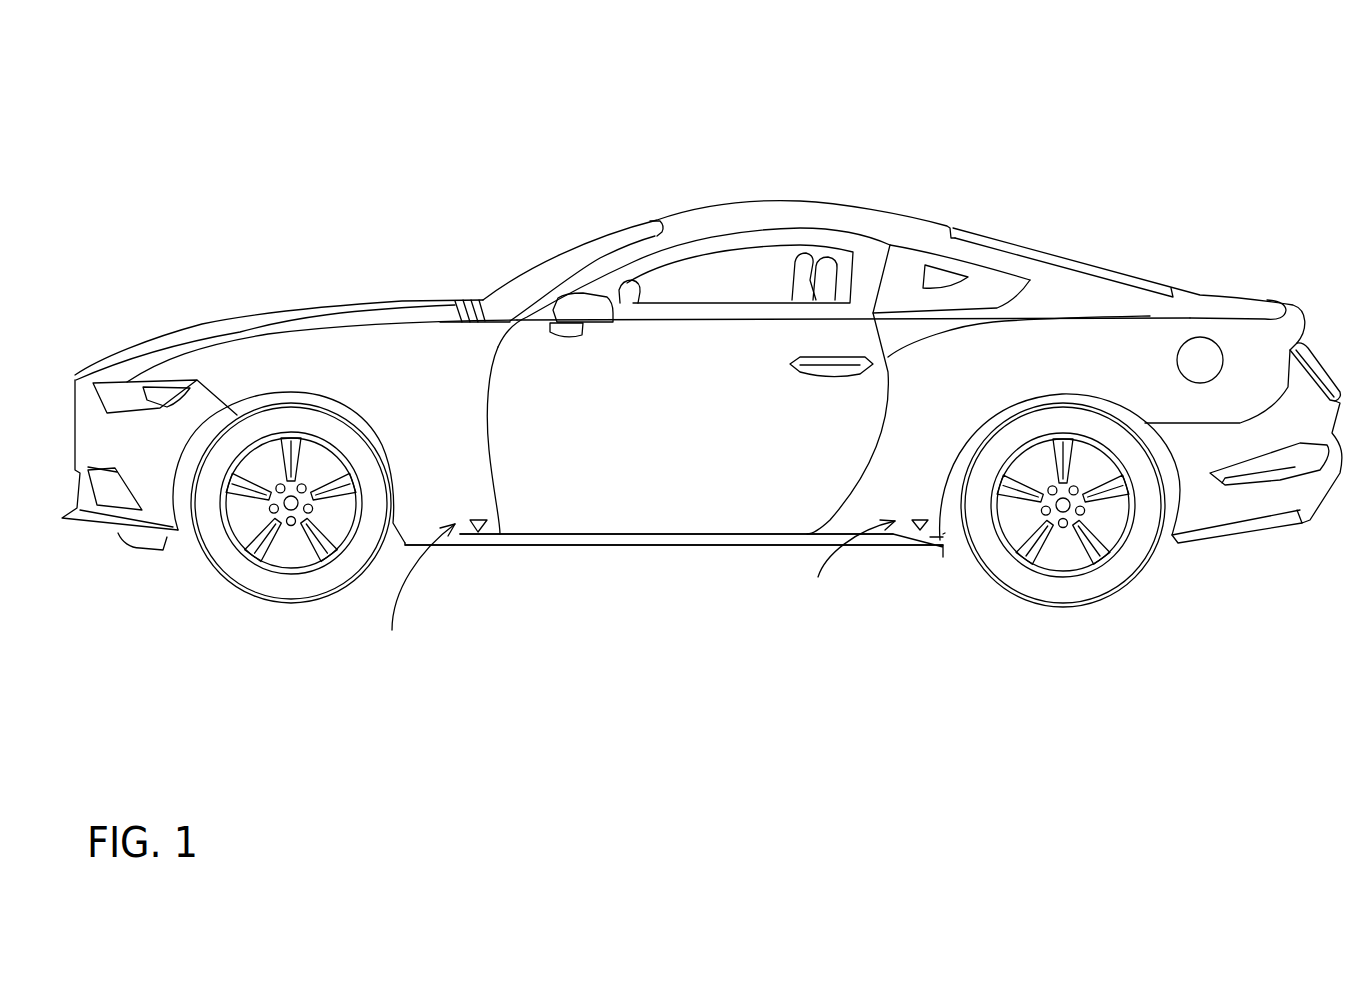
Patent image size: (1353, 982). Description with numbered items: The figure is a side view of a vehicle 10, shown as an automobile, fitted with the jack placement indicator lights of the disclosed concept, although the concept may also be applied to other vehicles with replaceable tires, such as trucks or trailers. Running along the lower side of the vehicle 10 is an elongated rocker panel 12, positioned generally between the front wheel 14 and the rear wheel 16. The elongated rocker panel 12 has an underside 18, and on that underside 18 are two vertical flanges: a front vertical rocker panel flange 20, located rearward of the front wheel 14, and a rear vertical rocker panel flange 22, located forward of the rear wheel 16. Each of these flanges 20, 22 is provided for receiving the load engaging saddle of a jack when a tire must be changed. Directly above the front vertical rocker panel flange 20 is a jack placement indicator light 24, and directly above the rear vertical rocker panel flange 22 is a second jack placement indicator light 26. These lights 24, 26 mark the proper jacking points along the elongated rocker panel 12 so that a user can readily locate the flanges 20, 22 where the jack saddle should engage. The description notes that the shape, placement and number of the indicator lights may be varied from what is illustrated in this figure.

The vehicle 10 is at (702, 379).
The elongated rocker panel 12 is at (700, 547).
The front wheel 14 is at (270, 592).
The rear wheel 16 is at (1113, 587).
The underside 18 is at (597, 547).
The front vertical rocker panel flange 20 is at (480, 550).
The rear vertical rocker panel flange 22 is at (925, 548).
The jack placement indicator light 24 is at (414, 593).
The jack placement indicator light 26 is at (843, 567).